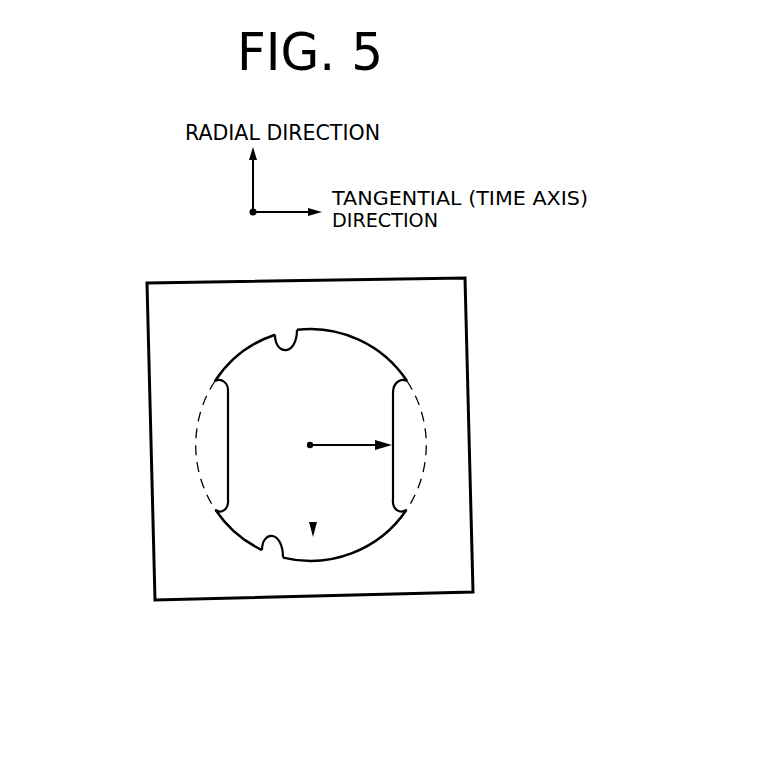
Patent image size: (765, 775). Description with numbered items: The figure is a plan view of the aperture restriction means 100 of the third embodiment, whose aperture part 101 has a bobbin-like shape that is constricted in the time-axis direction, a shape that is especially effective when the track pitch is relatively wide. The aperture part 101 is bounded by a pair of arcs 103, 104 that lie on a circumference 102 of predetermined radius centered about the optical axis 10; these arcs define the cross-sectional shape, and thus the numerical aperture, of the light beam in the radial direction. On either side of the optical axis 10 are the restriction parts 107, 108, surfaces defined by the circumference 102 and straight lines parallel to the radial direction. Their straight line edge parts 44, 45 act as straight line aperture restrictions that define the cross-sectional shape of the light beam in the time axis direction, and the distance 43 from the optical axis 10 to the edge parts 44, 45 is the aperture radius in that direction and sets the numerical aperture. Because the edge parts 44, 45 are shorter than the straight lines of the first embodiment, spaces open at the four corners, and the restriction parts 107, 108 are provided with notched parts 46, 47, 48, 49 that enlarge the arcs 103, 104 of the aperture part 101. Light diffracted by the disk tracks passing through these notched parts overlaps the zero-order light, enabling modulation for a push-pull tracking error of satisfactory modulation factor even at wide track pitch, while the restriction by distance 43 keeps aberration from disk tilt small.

The optical axis 10 is at (310, 448).
The distance 43 is at (333, 442).
The straight line edge part 44 is at (393, 477).
The straight line edge part 45 is at (228, 433).
The notched part 46 is at (397, 377).
The notched part 47 is at (218, 385).
The notched part 48 is at (222, 513).
The notched part 49 is at (403, 513).
The aperture restriction means 100 is at (467, 292).
The aperture part 101 is at (313, 530).
The circumference 102 is at (205, 492).
The arc 103 is at (286, 345).
The arc 104 is at (273, 543).
The restriction part 107 is at (413, 420).
The restriction part 108 is at (213, 443).